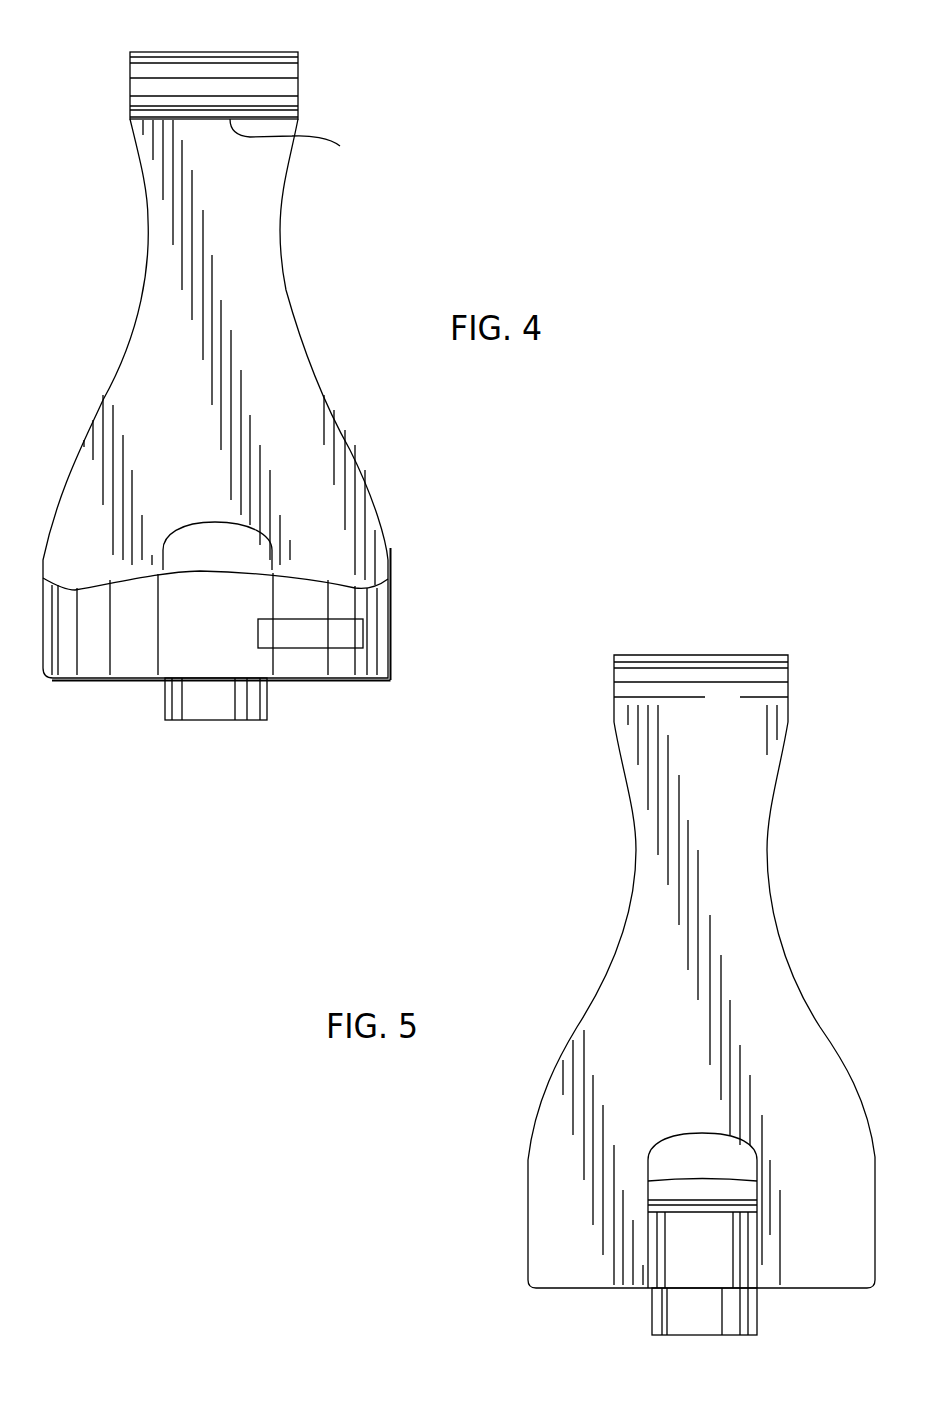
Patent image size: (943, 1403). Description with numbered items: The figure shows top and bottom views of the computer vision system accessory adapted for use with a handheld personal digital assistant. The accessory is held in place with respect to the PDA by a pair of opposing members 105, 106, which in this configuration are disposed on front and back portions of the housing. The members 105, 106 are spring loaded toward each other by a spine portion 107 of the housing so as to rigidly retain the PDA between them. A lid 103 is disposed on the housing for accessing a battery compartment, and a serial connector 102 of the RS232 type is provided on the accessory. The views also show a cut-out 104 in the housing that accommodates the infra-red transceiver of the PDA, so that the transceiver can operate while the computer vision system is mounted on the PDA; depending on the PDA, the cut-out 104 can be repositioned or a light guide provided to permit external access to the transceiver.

In FIG. 4, the serial connector 102 is at (310, 141).
In FIG. 4, the lid 103 is at (363, 636).
In FIG. 4, the cut-out 104 is at (200, 523).
In FIG. 5, the cut-out 104 is at (670, 1138).
In FIG. 4, the opposing member 105 is at (203, 570).
In FIG. 4, the opposing member 106 is at (221, 52).
In FIG. 5, the opposing member 106 is at (697, 655).
In FIG. 4, the spine portion 107 is at (288, 297).
In FIG. 5, the spine portion 107 is at (767, 870).